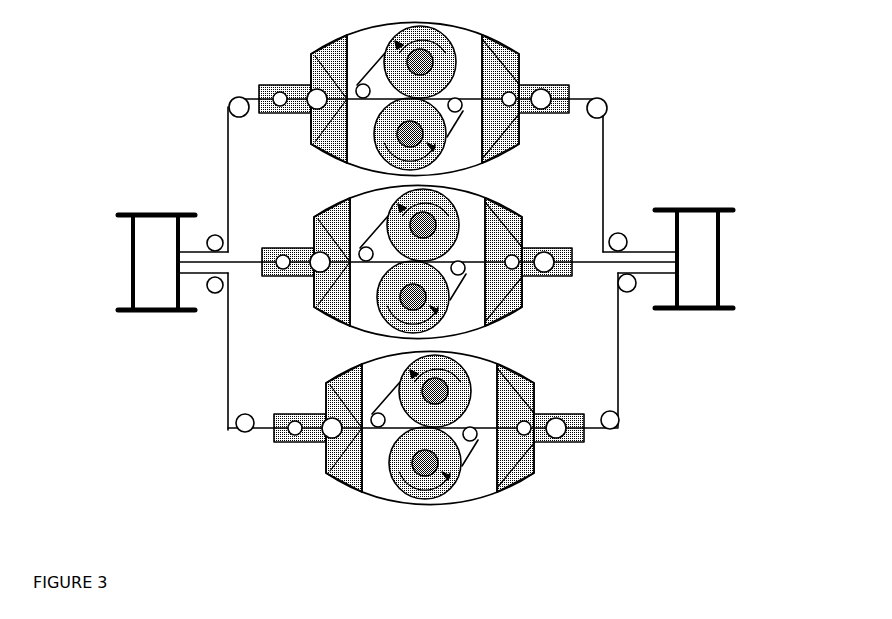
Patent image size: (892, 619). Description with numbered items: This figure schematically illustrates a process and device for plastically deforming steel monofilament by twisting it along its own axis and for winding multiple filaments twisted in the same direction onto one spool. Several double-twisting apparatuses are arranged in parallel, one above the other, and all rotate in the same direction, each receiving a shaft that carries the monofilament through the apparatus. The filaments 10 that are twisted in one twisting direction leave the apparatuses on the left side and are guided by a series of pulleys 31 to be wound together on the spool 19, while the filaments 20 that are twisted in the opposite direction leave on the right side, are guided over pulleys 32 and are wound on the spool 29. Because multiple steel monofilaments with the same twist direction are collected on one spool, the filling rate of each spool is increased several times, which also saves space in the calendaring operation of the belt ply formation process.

The filament 10 is at (247, 262).
The filament 20 is at (583, 260).
The pulleys 31 is at (232, 100).
The pulleys 32 is at (604, 102).
The spool 19 is at (148, 295).
The spool 29 is at (702, 288).